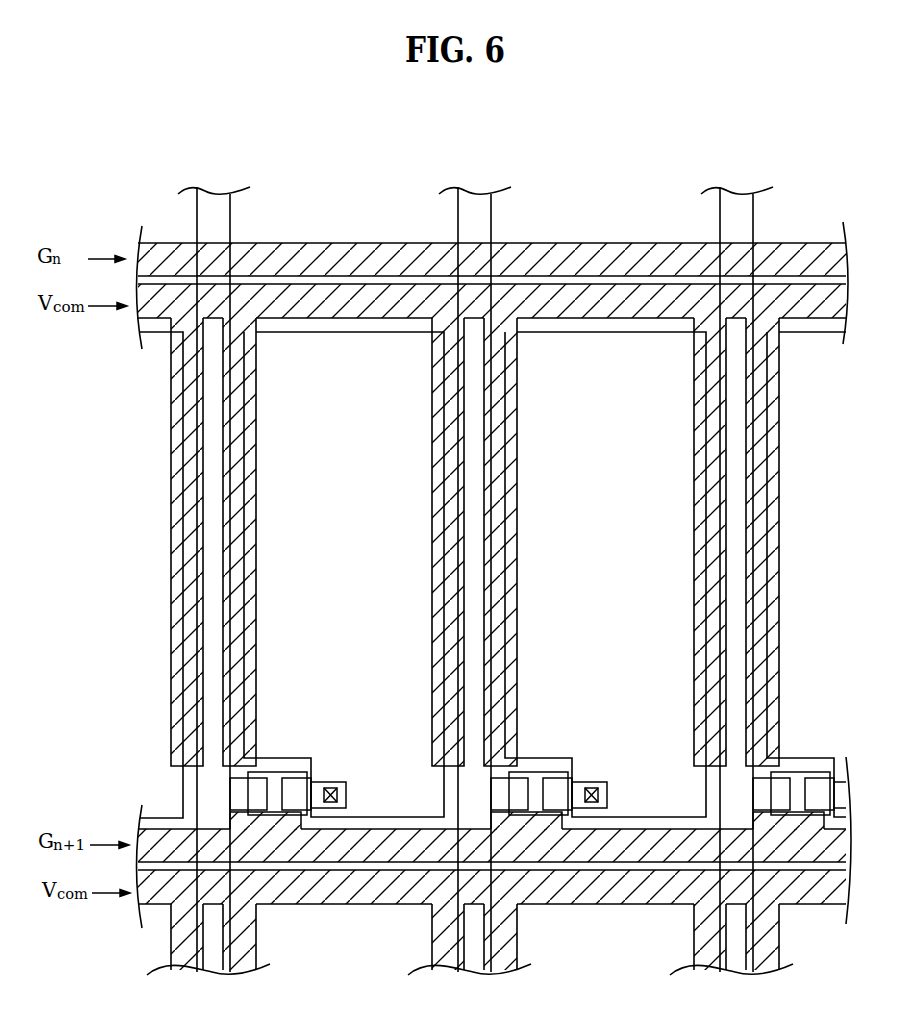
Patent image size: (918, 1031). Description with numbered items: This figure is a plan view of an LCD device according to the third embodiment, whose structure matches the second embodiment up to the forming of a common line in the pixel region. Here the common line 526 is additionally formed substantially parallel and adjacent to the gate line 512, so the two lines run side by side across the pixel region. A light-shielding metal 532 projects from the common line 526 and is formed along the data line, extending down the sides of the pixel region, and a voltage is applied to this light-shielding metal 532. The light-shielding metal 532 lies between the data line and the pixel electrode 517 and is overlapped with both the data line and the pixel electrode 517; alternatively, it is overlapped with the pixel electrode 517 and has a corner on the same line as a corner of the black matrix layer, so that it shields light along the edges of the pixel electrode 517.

The gate line 512 is at (575, 262).
The common line 526 is at (351, 303).
The pixel electrode 517 is at (636, 331).
The light-shielding metal 532 is at (172, 463).